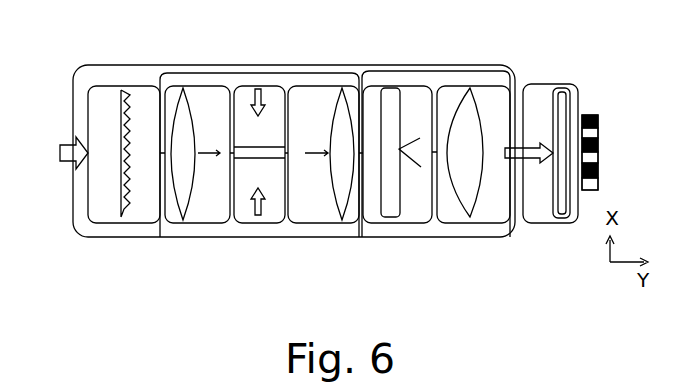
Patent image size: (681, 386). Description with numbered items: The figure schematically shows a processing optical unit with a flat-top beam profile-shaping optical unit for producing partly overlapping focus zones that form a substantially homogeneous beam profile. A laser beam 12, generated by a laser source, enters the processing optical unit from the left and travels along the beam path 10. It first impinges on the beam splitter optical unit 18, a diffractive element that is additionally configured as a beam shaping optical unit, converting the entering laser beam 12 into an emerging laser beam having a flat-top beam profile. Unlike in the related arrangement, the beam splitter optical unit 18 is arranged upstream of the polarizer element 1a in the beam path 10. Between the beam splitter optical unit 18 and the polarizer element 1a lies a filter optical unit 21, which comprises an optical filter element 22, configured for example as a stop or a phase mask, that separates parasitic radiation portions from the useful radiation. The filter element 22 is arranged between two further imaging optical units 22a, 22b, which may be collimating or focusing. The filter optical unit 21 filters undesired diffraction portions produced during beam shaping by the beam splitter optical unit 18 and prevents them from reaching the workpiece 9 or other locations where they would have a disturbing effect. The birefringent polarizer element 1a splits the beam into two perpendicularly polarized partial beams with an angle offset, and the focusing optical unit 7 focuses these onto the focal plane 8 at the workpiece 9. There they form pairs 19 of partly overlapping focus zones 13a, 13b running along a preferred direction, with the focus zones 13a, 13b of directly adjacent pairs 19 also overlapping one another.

The polarizer element 1a is at (413, 80).
The focusing optical unit 7 is at (492, 70).
The focal plane 8 is at (553, 246).
The workpiece 9 is at (560, 88).
The beam path 10 is at (349, 96).
The laser beam 12 is at (63, 148).
The focus zone 13a is at (590, 113).
The focus zone 13b is at (600, 158).
The beam splitter optical unit 18 is at (104, 84).
The pair of focus zones 19 is at (629, 125).
The filter optical unit 21 is at (262, 72).
The optical filter element 22 is at (273, 110).
The imaging optical unit 22a is at (186, 210).
The imaging optical unit 22b is at (343, 210).